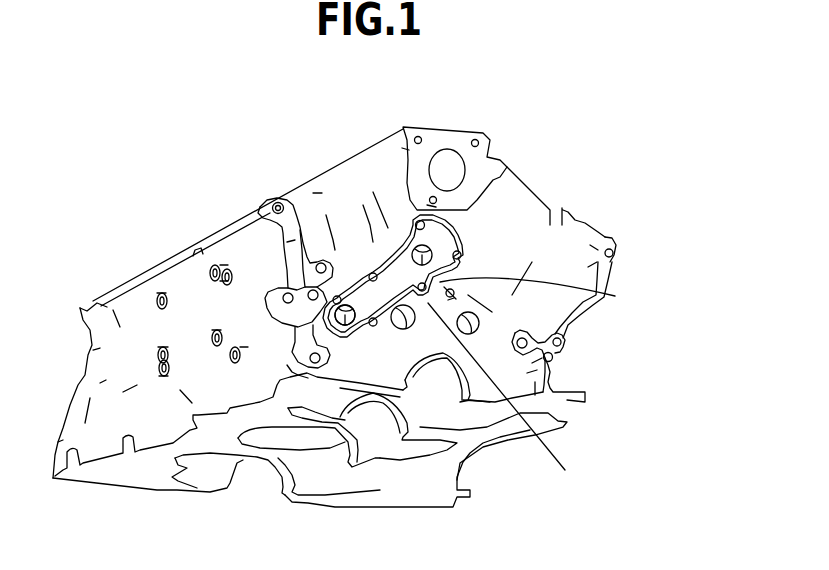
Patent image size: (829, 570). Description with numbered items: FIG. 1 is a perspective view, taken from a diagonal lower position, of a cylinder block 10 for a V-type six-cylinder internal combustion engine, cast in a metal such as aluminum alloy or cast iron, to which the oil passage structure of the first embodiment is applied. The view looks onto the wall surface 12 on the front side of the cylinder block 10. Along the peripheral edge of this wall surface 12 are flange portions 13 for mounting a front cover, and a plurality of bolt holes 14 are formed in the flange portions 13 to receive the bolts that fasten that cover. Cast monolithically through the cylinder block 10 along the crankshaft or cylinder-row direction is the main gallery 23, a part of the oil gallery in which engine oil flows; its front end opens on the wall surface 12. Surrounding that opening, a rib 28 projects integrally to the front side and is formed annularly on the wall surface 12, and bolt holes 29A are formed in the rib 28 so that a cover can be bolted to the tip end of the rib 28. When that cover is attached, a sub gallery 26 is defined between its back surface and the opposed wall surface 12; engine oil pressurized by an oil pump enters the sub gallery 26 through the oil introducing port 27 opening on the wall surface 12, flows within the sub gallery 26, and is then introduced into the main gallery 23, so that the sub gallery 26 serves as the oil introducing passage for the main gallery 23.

The cylinder block 10 is at (532, 162).
The wall surface 12 is at (509, 397).
The flange portions 13 is at (578, 319).
The bolt holes 14 is at (614, 253).
The main gallery 23 is at (408, 256).
The sub gallery 26 is at (601, 291).
The oil introducing port 27 is at (346, 326).
The rib 28 is at (368, 270).
The bolt holes 29A is at (369, 273).